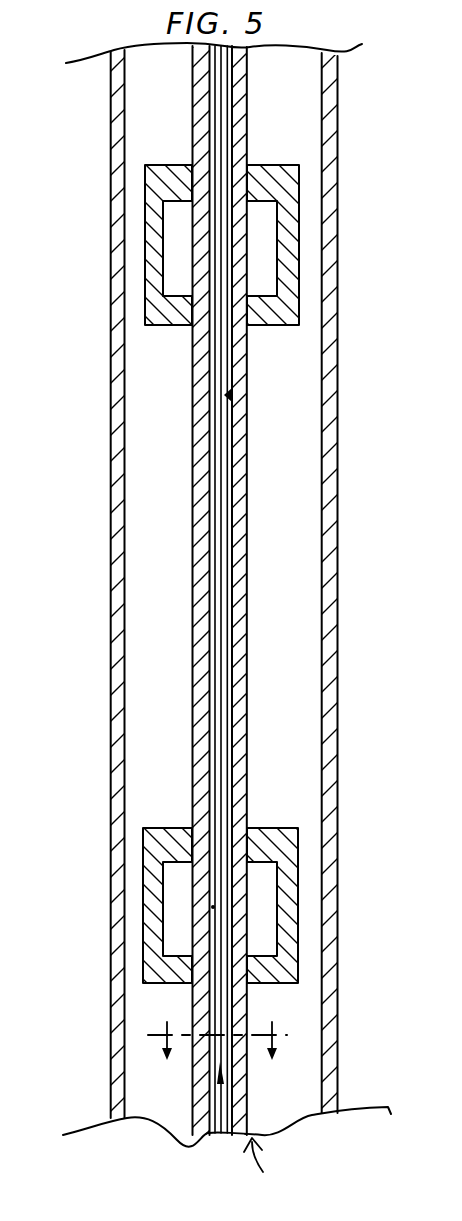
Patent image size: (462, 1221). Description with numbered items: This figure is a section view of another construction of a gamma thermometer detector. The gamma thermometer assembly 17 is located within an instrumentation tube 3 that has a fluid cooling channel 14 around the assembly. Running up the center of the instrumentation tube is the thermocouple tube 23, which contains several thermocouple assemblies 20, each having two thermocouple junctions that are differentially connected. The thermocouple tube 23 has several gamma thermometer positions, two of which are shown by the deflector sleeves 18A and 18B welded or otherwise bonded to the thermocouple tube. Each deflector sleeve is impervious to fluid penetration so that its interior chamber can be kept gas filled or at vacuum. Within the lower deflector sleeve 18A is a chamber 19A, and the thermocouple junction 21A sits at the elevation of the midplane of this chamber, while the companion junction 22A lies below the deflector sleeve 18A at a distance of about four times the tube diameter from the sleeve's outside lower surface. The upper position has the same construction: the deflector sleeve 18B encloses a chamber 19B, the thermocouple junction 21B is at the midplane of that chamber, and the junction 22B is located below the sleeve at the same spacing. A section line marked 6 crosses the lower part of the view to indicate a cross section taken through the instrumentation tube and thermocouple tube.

The instrumentation tube 3 is at (337, 593).
The fluid cooling channel 14 is at (298, 522).
The gamma thermometer assembly 17 is at (272, 1165).
The deflector sleeve 18A is at (298, 843).
The deflector sleeve 18B is at (300, 179).
The chamber 19A is at (263, 885).
The chamber 19B is at (265, 218).
The thermocouple assembly 20 is at (220, 655).
The thermocouple junction 21A is at (213, 907).
The thermocouple junction 21B is at (227, 248).
The thermocouple junction 22A is at (223, 1075).
The thermocouple junction 22B is at (231, 395).
The thermocouple tube 23 is at (247, 752).
The section line 6- 6 is at (217, 1058).